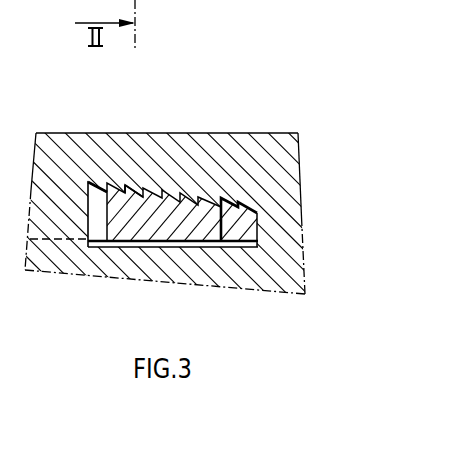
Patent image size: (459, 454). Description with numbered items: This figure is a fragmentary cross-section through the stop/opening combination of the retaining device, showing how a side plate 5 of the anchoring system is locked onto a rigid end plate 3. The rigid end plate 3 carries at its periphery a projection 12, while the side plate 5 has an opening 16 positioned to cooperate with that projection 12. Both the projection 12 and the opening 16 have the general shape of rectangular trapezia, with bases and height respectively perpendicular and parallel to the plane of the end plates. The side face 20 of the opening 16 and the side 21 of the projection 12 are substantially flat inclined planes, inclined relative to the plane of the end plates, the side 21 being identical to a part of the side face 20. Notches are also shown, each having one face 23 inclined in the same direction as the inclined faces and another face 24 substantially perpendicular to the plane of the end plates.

The rigid end plate 3 is at (88, 181).
The side plate 5 is at (257, 280).
The projection 12 is at (209, 224).
The opening 16 is at (258, 240).
The side face of the opening 20 is at (252, 202).
The side of the projection 21 is at (203, 207).
The notch face 23 is at (137, 193).
The notch face 24 is at (124, 191).